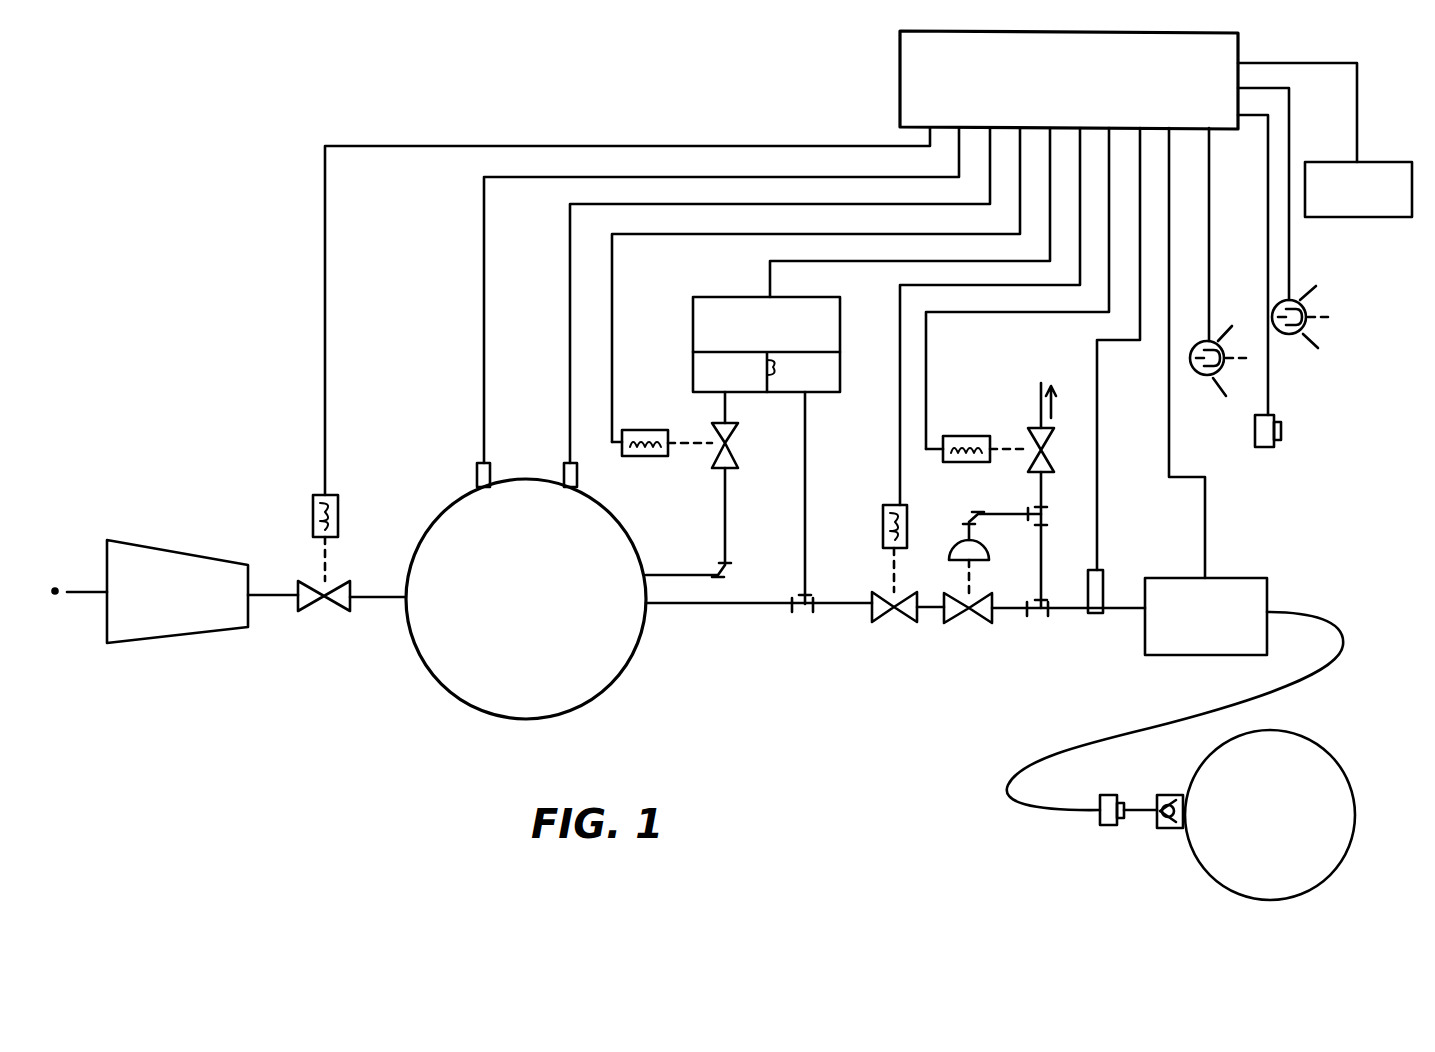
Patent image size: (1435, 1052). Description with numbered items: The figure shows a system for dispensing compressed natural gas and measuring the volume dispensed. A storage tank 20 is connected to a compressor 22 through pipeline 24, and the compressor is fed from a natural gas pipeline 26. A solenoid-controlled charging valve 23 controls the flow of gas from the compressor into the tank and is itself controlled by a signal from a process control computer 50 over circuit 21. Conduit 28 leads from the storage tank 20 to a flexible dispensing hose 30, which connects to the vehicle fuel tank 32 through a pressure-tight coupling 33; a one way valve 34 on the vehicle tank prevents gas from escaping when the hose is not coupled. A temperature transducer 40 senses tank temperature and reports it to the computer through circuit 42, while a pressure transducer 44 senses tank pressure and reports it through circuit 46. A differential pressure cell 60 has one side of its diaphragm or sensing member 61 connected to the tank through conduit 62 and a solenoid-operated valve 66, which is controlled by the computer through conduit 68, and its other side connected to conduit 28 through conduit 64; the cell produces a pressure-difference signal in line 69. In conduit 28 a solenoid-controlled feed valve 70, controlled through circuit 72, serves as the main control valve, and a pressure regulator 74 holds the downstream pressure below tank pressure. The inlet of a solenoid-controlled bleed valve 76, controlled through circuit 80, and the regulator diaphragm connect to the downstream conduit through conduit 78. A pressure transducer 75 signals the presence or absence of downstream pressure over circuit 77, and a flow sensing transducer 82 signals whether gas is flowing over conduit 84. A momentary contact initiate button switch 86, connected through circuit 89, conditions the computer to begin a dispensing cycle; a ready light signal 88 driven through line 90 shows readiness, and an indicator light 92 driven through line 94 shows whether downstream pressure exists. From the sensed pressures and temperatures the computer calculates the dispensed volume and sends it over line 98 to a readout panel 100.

The storage tank 20 is at (638, 650).
The circuit 21 is at (325, 257).
The compressor 22 is at (203, 553).
The solenoid-controlled charging valve 23 is at (325, 602).
The pipeline 24 is at (275, 590).
The natural gas pipeline 26 is at (80, 591).
The conduit 28 is at (846, 605).
The flexible dispensing hose 30 is at (1143, 725).
The vehicle fuel tank 32 is at (1212, 752).
The pressure-tight coupling 33 is at (1105, 826).
The one way valve 34 is at (1168, 828).
The temperature transducer 40 is at (477, 473).
The circuit 42 is at (483, 259).
The pressure transducer 44 is at (565, 473).
The circuit 46 is at (575, 262).
The process control computer 50 is at (899, 47).
The differential pressure cell 60 is at (693, 350).
The diaphragm or sensing member 61 is at (774, 368).
The conduit 62 is at (727, 520).
The conduit 64 is at (807, 520).
The solenoid-operated valve 66 is at (738, 445).
The conduit 68 is at (614, 268).
The line 69 is at (768, 268).
The solenoid-controlled feed valve 70 is at (889, 621).
The circuit 72 is at (896, 379).
The pressure regulator 74 is at (970, 622).
The pressure transducer 75 is at (1104, 581).
The solenoid-controlled bleed valve 76 is at (1049, 446).
The circuit 77 is at (1098, 391).
The conduit 78 is at (1044, 492).
The circuit 80 is at (927, 400).
The flow sensing transducer 82 is at (1245, 578).
The conduit 84 is at (1168, 426).
The momentary contact initiate button switch 86 is at (1262, 448).
The ready light signal 88 is at (1200, 375).
The circuit 89 is at (1270, 379).
The line 90 is at (1210, 268).
The indicator light 92 is at (1310, 306).
The line 94 is at (1290, 252).
The line 98 is at (1355, 103).
The readout panel 100 is at (1336, 160).